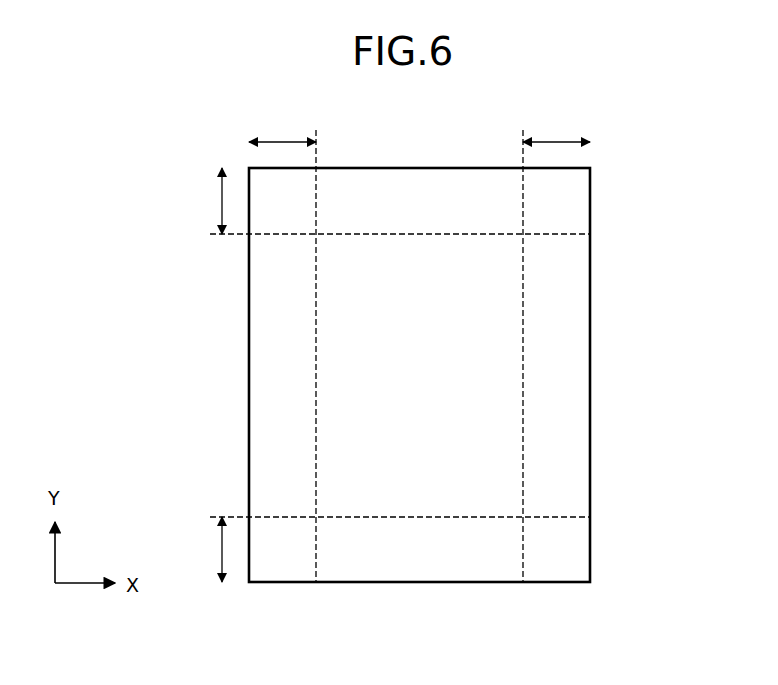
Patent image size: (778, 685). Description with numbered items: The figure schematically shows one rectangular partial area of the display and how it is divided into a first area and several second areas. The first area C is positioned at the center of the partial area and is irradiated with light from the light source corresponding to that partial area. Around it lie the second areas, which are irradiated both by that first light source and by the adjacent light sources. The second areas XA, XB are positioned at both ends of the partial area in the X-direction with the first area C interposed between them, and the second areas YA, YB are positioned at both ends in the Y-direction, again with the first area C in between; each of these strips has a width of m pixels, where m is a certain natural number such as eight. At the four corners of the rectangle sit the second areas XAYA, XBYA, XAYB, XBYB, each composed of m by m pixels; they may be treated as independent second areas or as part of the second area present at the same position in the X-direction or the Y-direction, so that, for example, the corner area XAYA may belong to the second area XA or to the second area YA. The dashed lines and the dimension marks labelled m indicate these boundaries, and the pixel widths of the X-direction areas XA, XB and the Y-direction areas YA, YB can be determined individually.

The second area XAYA is at (280, 198).
The second area YA is at (375, 188).
The first area C is at (417, 272).
The second area XBYA is at (560, 203).
The second area XA is at (278, 381).
The second area XB is at (562, 381).
The second area XAYB is at (283, 560).
The second area YB is at (422, 560).
The second area XBYB is at (558, 560).
The pixel width m is at (393, 349).